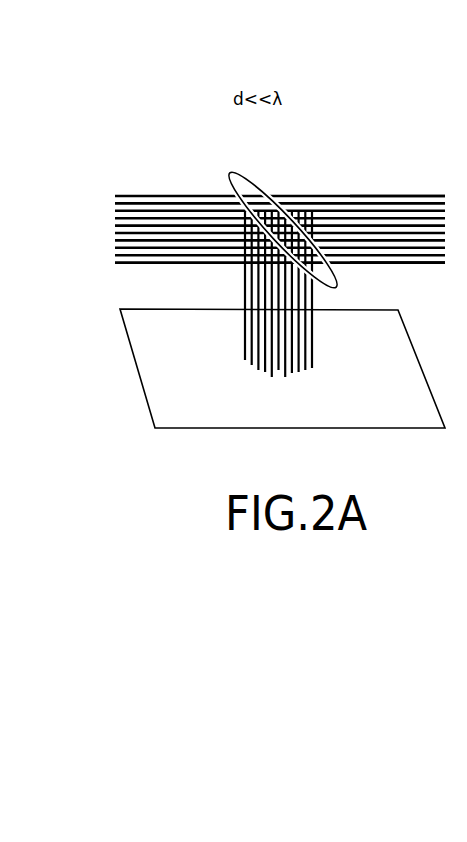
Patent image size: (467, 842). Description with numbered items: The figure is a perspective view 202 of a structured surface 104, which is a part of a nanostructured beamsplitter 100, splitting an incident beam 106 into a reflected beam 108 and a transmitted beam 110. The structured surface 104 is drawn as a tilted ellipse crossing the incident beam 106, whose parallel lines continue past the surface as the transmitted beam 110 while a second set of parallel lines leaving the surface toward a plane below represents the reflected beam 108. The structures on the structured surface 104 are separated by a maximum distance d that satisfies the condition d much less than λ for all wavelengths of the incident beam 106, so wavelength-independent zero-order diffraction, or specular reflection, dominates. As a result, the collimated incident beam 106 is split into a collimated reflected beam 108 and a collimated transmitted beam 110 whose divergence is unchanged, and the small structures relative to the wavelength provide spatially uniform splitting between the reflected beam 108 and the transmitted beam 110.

The perspective view 202 is at (132, 115).
The nanostructured beamsplitter 100 is at (350, 282).
The structured surface 104 is at (240, 171).
The incident beam 106 is at (162, 195).
The reflected beam 108 is at (246, 301).
The transmitted beam 110 is at (353, 195).